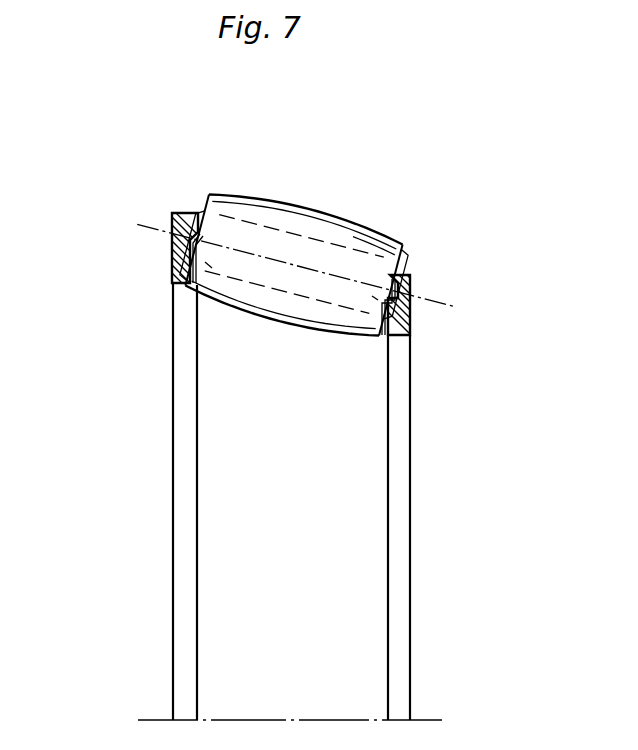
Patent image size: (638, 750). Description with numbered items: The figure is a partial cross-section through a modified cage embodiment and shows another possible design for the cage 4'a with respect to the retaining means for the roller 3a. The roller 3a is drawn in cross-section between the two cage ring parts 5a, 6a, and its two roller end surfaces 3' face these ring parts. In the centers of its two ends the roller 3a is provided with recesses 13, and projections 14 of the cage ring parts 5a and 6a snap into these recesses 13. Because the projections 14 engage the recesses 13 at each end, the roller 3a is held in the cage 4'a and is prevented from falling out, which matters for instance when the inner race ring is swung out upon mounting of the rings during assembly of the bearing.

The roller 3a is at (328, 225).
The roller end surface 3' is at (323, 212).
The cage 4'a is at (264, 501).
The cage ring part 5a is at (172, 222).
The cage ring part 6a is at (410, 328).
The recess 13 is at (207, 263).
The projection 14 is at (172, 247).